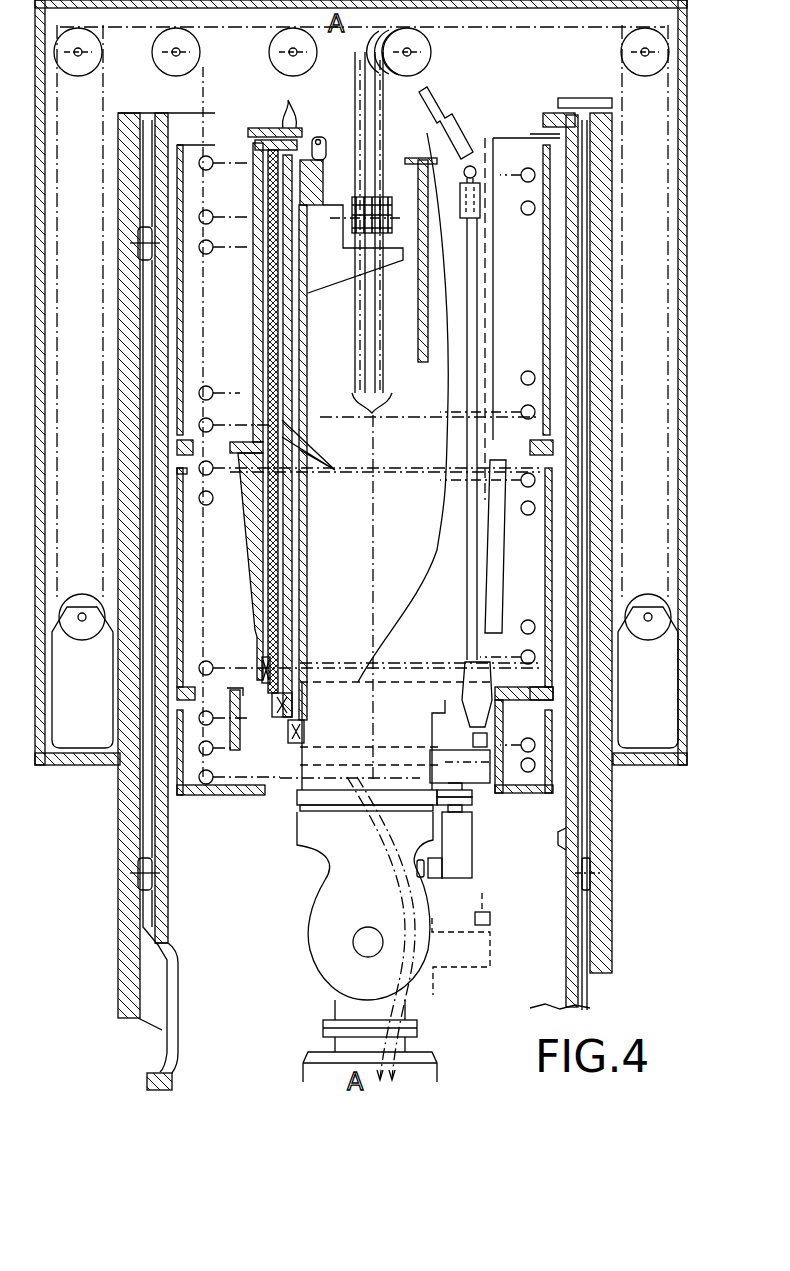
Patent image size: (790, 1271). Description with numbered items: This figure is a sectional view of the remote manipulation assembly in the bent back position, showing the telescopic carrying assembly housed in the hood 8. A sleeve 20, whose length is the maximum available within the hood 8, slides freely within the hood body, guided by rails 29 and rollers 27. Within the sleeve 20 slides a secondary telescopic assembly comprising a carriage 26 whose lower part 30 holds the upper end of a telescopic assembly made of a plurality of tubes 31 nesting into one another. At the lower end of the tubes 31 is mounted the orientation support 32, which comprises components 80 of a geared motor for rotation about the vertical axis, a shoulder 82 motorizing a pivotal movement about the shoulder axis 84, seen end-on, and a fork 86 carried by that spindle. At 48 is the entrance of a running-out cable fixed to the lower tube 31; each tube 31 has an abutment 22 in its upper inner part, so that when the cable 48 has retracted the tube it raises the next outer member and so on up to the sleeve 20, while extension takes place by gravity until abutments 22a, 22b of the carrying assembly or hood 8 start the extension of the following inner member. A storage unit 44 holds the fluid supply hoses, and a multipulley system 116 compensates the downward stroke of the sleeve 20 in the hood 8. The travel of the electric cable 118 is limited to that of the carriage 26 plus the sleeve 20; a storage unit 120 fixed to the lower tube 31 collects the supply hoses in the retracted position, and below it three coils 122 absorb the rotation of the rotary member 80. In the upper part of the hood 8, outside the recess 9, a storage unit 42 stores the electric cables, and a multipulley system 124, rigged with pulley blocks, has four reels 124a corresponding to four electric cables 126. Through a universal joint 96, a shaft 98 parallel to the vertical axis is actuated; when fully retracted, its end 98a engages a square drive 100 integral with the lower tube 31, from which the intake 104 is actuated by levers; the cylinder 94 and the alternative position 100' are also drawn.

The hood 8 is at (123, 993).
The cylindrical recess 9 is at (118, 350).
The sleeve 20 is at (165, 820).
The abutment 22 is at (288, 112).
The abutment 22a is at (250, 128).
The abutment 22b is at (273, 640).
The carriage 26 is at (257, 630).
The rollers 27 is at (152, 883).
The rails 29 is at (155, 912).
The lower part of carriage 30 is at (262, 725).
The tubes 31 is at (385, 463).
The orientation support 32 is at (172, 1088).
The storage unit for electric cables 42 is at (648, 750).
The storage unit 44 is at (92, 750).
The running-out cable 48 is at (318, 138).
The rotary member 80 is at (272, 1082).
The shoulder 82 is at (338, 878).
The shoulder axis 84 is at (353, 942).
The fork 86 is at (427, 1067).
The cylinder 94 is at (452, 120).
The universal joint 96 is at (480, 218).
The shaft 98 is at (473, 322).
The end of shaft 98a is at (463, 673).
The square drive 100 is at (385, 743).
The alternative sensor 100' is at (492, 944).
The intake 104 is at (425, 878).
The multipulley system 116 is at (152, 48).
The electric cable 118 is at (200, 99).
The storage unit 120 is at (183, 558).
The coils 122 is at (200, 785).
The multipulley system 124 is at (622, 58).
The reel 124a is at (432, 43).
The electric cables 126 is at (397, 92).